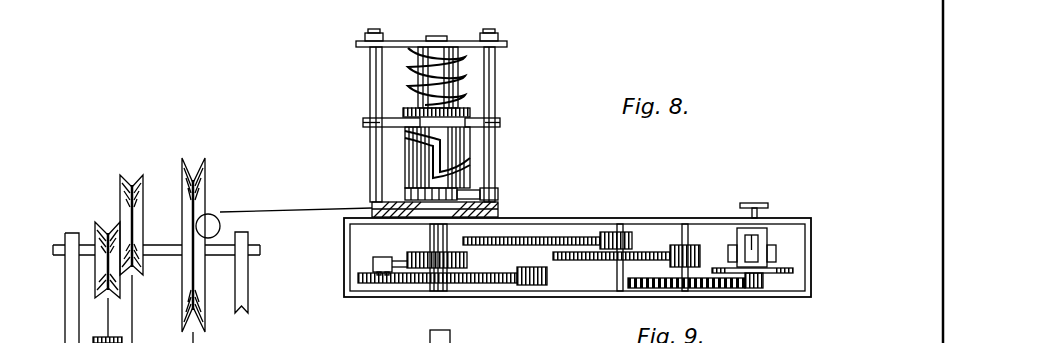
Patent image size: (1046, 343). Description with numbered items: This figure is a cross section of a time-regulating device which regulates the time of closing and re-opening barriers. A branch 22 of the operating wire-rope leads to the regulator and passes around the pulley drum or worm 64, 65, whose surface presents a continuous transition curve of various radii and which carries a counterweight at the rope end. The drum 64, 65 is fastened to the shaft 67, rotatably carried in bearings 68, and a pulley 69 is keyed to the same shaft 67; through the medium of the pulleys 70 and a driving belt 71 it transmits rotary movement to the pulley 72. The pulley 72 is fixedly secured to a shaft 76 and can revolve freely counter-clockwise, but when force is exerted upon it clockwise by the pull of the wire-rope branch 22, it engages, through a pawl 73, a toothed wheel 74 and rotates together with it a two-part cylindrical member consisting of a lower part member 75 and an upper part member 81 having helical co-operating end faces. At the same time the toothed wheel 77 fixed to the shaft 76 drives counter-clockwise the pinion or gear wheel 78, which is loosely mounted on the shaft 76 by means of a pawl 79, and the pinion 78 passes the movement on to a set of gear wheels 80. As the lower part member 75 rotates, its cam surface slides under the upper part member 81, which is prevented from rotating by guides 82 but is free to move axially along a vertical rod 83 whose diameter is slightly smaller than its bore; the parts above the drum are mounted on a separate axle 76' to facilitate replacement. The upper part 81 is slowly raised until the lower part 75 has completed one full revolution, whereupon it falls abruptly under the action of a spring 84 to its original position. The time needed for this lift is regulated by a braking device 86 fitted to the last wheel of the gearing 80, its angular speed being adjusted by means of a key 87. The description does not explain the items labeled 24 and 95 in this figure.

The separate axle 76' is at (435, 23).
The guides 82 is at (495, 96).
The vertical rod 83 is at (465, 75).
The spring 84 is at (420, 52).
The upper cylindrical part member 81 is at (470, 133).
The lower cylindrical part member 75 is at (403, 162).
The toothed wheel 74 is at (407, 197).
The pawl 73 is at (497, 191).
The pulley 72 is at (498, 215).
The driving belt 71 is at (302, 212).
The pulleys 70 is at (222, 212).
The shaft 67 is at (62, 253).
The bearings 68 is at (67, 318).
The pulley drum or worm 65 is at (97, 236).
The pulley drum or worm 64 is at (140, 176).
The pulley 69 is at (188, 283).
The branch of the operating wire-rope 22 is at (108, 334).
The gear housing 24 is at (615, 217).
The shaft 76 is at (418, 257).
The toothed wheel 77 is at (467, 260).
The pawl 79 is at (373, 263).
The pinion or gear wheel 78 is at (392, 288).
The set of gear wheels 80 is at (626, 269).
The braking device 86 is at (760, 243).
The key 87 is at (745, 203).
The block 95 is at (466, 336).